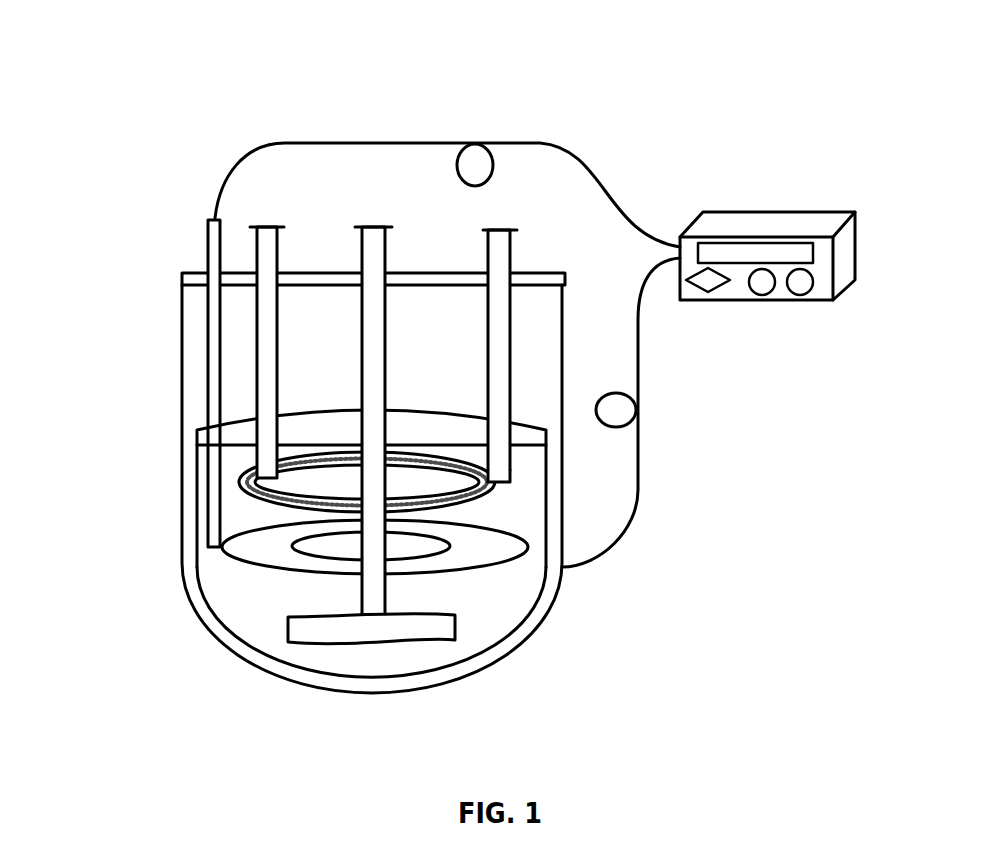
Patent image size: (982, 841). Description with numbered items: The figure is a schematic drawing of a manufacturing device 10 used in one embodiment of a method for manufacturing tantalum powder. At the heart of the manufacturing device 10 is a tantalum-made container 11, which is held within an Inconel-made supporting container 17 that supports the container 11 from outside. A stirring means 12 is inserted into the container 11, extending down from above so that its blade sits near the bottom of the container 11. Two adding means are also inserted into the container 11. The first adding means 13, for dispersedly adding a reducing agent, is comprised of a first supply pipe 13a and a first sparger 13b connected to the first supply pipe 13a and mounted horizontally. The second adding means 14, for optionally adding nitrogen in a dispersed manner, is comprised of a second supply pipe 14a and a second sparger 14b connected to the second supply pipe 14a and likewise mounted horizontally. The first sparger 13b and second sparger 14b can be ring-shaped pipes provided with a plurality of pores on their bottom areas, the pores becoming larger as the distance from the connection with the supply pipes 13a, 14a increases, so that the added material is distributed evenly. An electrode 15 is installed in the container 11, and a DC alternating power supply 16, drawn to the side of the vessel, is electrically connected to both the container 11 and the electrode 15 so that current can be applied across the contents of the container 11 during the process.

The manufacturing device 10 is at (362, 130).
The container 11 is at (197, 563).
The stirring means 12 is at (427, 643).
The first adding means 13 is at (428, 377).
The first supply pipe 13a is at (280, 362).
The first sparger 13b is at (492, 503).
The second adding means 14 is at (511, 358).
The second supply pipe 14a is at (488, 398).
The second sparger 14b is at (510, 487).
The electrode 15 is at (470, 573).
The DC alternating power supply 16 is at (770, 212).
The supporting container 17 is at (180, 462).